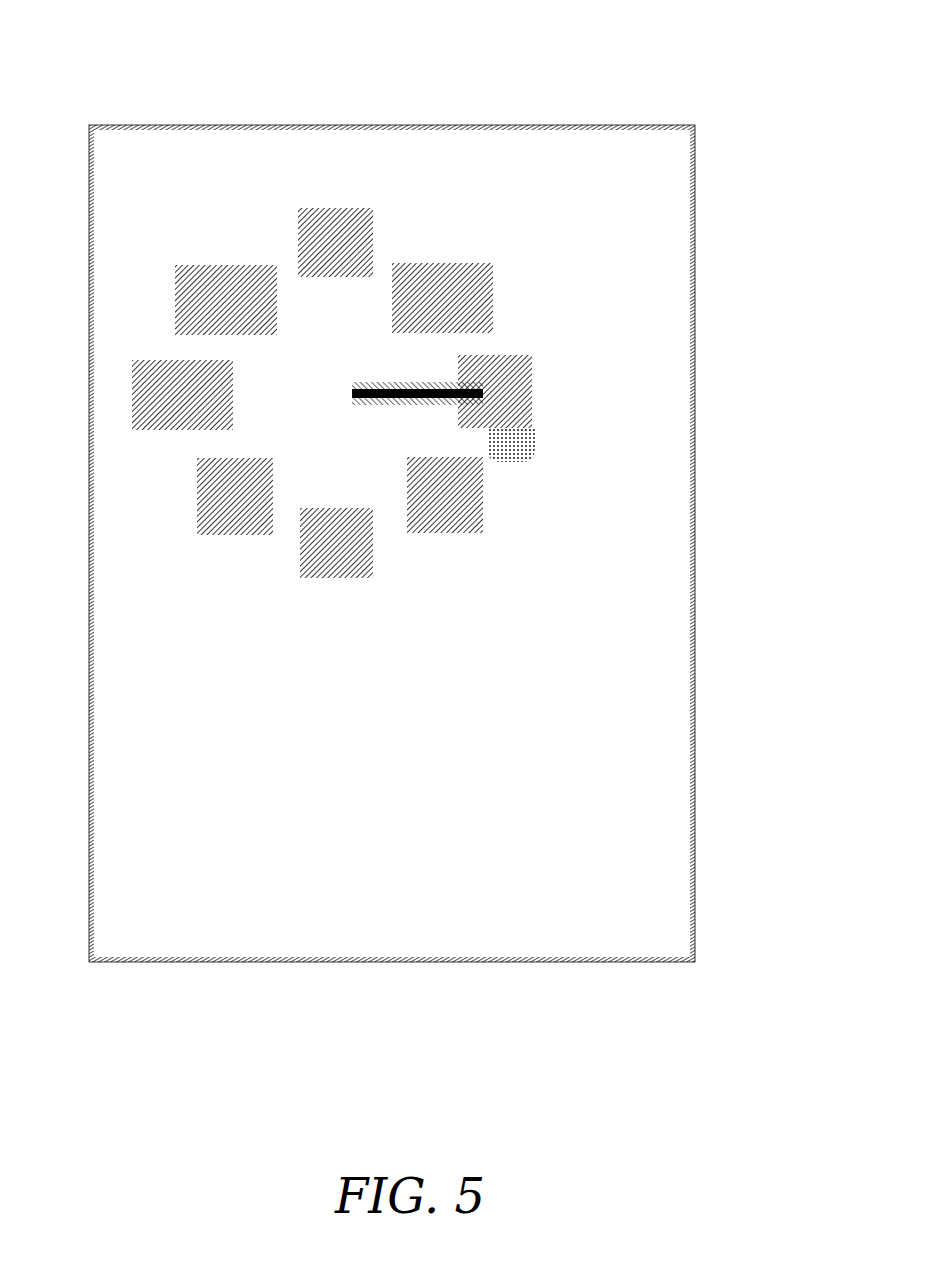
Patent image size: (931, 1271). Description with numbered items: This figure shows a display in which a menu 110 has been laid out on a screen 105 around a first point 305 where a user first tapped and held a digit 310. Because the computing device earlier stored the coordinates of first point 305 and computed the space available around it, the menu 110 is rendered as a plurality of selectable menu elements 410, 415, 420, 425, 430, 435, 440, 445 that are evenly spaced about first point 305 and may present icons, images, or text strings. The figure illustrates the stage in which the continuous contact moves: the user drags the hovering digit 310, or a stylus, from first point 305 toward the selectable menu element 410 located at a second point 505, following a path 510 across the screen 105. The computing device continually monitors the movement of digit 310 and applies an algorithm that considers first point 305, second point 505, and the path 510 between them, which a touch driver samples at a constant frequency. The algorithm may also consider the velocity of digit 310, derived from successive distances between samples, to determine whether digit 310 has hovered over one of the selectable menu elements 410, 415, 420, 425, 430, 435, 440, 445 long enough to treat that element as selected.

The screen 105 is at (582, 262).
The menu 110 is at (215, 192).
The first point 305 is at (348, 390).
The digit 310 is at (530, 440).
The selectable menu element 410 is at (533, 378).
The selectable menu element 415 is at (483, 512).
The selectable menu element 420 is at (335, 548).
The selectable menu element 425 is at (227, 522).
The selectable menu element 430 is at (173, 405).
The selectable menu element 435 is at (177, 282).
The selectable menu element 440 is at (313, 220).
The selectable menu element 445 is at (457, 270).
The second point 505 is at (535, 410).
The path 510 is at (394, 404).